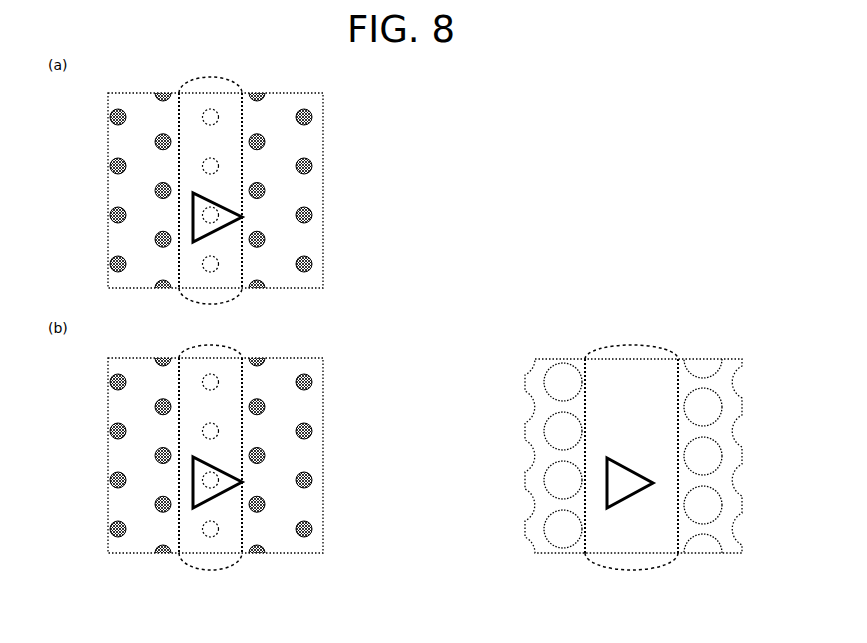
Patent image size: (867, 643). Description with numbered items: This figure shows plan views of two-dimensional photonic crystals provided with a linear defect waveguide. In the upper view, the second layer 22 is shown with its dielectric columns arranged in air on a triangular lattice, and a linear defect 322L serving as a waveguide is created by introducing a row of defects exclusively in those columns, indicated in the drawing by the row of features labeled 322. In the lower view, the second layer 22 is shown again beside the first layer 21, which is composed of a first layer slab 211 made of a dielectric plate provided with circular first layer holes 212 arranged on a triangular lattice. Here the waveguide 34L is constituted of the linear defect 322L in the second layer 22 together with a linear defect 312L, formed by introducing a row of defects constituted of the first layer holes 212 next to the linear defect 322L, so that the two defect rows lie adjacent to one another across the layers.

The second layer 22 is at (329, 341).
The first layer 21 is at (676, 471).
The second layer through holes 322 is at (315, 213).
The linear defect 322L is at (243, 158).
The linear defect 312L is at (536, 412).
The waveguide 34L is at (428, 323).
The first layer holes 212 is at (700, 405).
The first layer slab 211 is at (695, 438).